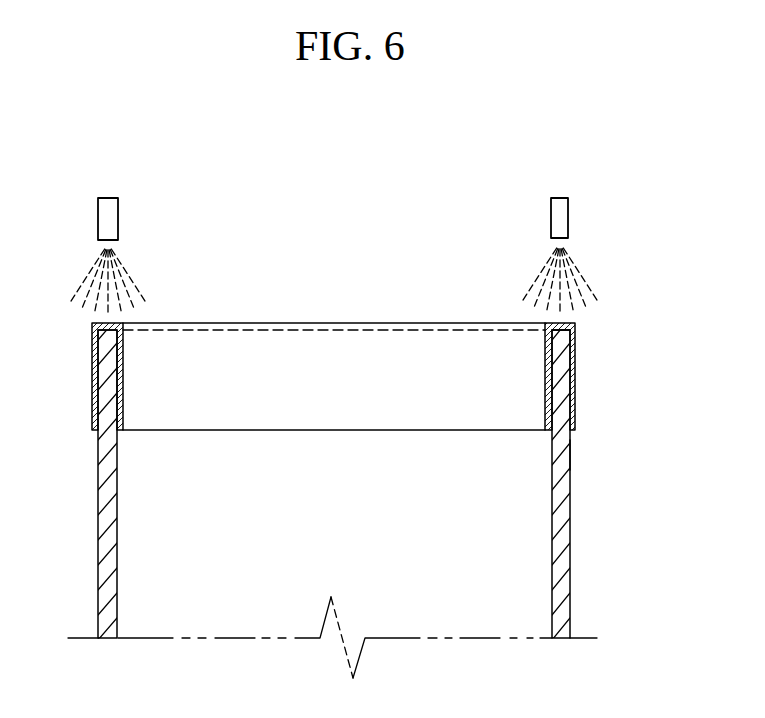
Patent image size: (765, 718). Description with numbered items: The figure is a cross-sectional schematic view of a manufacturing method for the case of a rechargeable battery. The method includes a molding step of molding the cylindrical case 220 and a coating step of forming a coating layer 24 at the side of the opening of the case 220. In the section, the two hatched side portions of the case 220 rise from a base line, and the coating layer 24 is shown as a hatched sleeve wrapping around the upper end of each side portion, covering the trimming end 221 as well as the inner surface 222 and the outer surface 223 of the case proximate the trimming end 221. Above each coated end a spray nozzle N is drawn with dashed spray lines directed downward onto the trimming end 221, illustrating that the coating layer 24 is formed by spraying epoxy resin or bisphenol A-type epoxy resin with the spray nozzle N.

The spray nozzle N is at (119, 217).
The coating layer 24 is at (92, 380).
The case 220 is at (370, 495).
The trimming end 221 is at (561, 323).
The inner surface 222 is at (561, 482).
The outer surface 223 is at (571, 453).